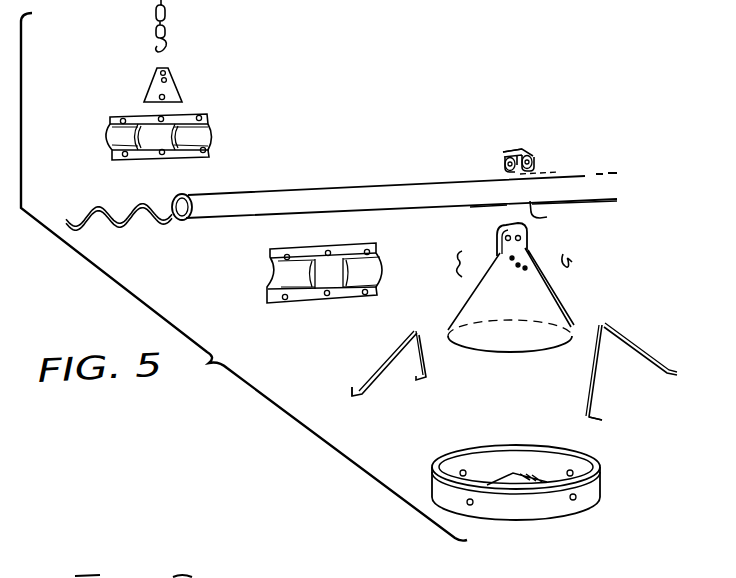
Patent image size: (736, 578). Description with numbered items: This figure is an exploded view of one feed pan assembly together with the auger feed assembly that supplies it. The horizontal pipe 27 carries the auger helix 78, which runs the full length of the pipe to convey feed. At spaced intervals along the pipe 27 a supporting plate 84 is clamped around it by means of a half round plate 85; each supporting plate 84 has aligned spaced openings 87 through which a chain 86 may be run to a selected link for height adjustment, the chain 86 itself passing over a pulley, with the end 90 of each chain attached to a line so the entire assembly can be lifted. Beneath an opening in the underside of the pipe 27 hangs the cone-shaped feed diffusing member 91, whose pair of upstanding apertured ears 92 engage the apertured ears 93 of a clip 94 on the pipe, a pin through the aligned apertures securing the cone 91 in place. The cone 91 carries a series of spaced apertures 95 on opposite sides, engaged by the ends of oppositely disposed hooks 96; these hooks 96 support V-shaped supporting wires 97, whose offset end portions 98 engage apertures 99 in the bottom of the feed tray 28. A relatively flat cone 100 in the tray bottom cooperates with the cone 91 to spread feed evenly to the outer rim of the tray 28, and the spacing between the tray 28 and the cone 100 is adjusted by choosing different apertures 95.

The pipe 27 is at (298, 193).
The feed tray 28 is at (557, 515).
The auger helix 78 is at (153, 199).
The supporting plate 84 is at (177, 98).
The half round plate 85 is at (207, 147).
The chain 86 is at (167, 46).
The aligned spaced openings 87 is at (170, 79).
The chain end 90 is at (551, 217).
The feed diffusing member 91 is at (549, 308).
The upstanding apertured ears 92 is at (499, 228).
The apertured ears 93 is at (537, 161).
The clip 94 is at (527, 153).
The spaced apertures 95 is at (517, 267).
The hooks 96 is at (519, 264).
The V-shaped supporting wires 97 is at (430, 370).
The offset end portions 98 is at (357, 390).
The holes 99 is at (466, 471).
The flat cone 100 is at (517, 472).